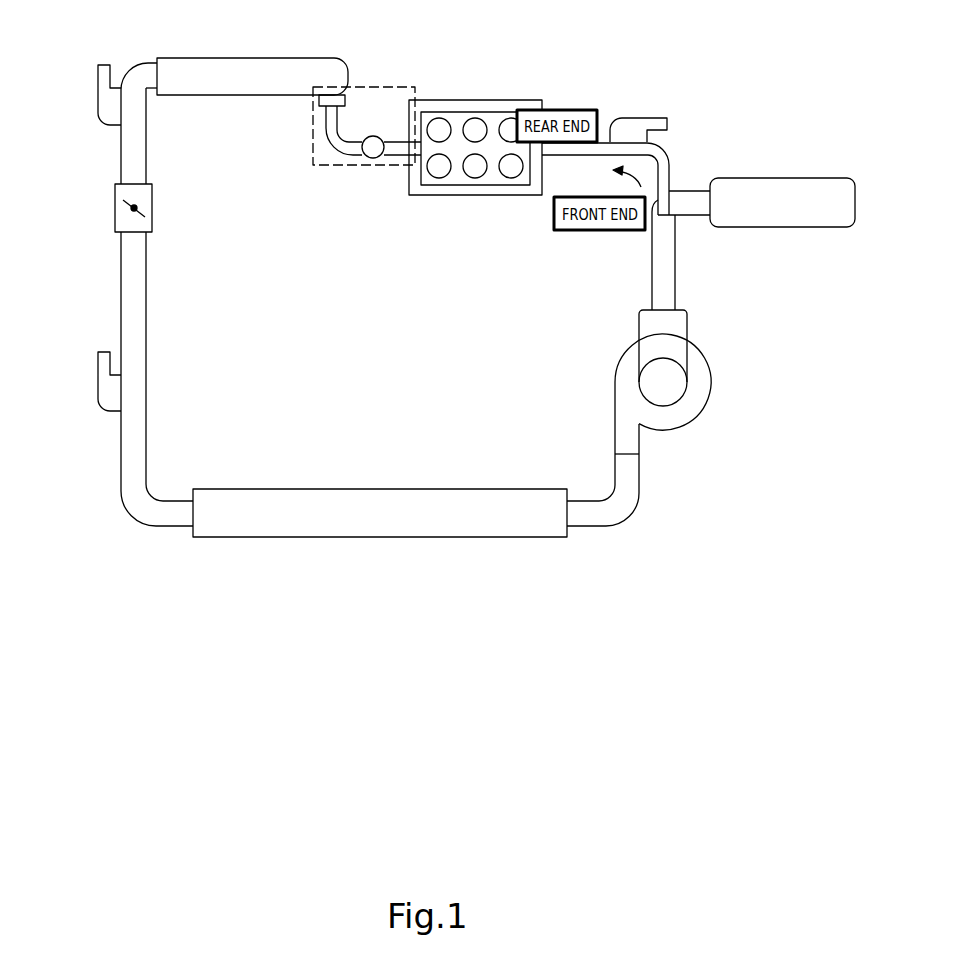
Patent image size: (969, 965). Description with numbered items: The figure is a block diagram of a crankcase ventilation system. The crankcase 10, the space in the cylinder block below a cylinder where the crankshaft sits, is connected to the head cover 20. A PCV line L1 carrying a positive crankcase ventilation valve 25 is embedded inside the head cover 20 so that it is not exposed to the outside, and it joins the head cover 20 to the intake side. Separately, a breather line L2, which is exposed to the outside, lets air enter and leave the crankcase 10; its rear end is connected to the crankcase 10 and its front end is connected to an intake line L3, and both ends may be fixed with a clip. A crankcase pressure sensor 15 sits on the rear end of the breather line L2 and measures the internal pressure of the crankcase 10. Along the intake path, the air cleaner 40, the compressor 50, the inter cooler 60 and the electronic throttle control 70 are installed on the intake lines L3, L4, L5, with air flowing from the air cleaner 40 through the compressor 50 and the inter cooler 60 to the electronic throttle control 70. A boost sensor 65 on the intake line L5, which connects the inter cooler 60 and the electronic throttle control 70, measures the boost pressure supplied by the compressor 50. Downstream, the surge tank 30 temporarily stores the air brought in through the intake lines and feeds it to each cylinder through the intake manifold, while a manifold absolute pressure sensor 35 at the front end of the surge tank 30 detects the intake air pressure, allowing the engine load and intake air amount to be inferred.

The crankcase 10 is at (473, 100).
The crankcase pressure sensor 15 is at (643, 118).
The head cover 20 is at (396, 87).
The positive crankcase ventilation valve 25 is at (374, 158).
The surge tank 30 is at (245, 58).
The manifold absolute pressure sensor 35 is at (98, 88).
The air cleaner 40 is at (781, 178).
The compressor 50 is at (615, 382).
The inter cooler 60 is at (378, 489).
The boost sensor 65 is at (98, 374).
The electronic throttle control 70 is at (115, 208).
The PCV line L1 is at (373, 130).
The breather line L2 is at (626, 177).
The intake line L3 is at (648, 255).
The intake line L4 is at (603, 454).
The intake line L5 is at (157, 294).